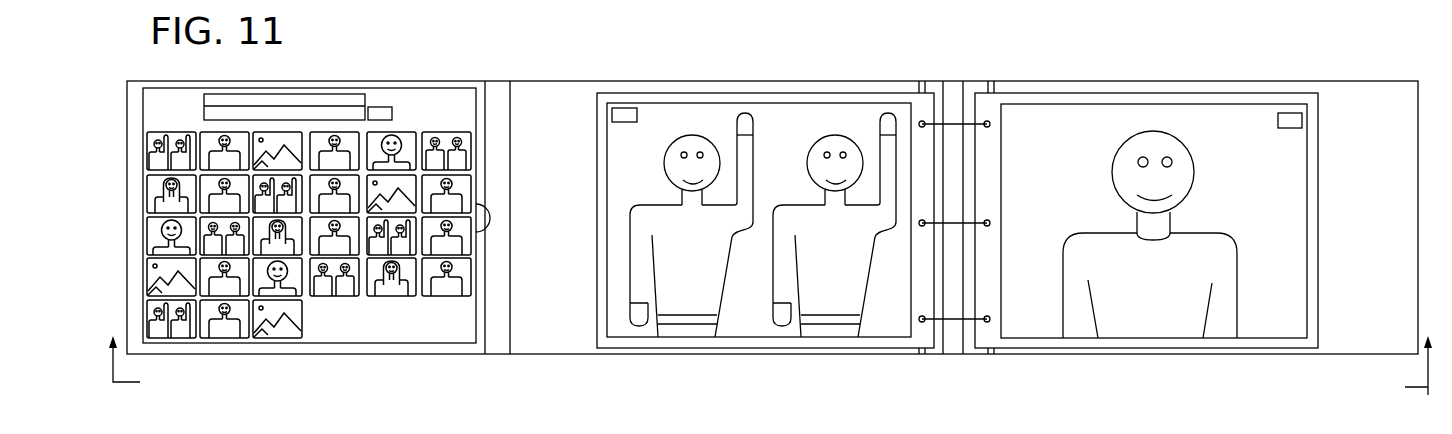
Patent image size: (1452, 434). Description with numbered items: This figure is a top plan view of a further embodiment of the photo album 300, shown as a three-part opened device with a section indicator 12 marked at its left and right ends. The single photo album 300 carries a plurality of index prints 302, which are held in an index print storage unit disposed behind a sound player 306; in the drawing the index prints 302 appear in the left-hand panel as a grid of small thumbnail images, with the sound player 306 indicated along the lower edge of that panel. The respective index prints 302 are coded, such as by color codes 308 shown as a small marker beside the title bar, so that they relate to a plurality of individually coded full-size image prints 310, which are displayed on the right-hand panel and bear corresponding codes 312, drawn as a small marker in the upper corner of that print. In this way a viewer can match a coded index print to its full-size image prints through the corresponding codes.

The photo album 300 is at (756, 67).
The index prints 302 is at (476, 107).
The sound player 306 is at (195, 345).
The color codes 308 is at (392, 114).
The full-size image prints 310 is at (1190, 103).
The corresponding codes 312 is at (1288, 113).
The section line 12 is at (770, 379).